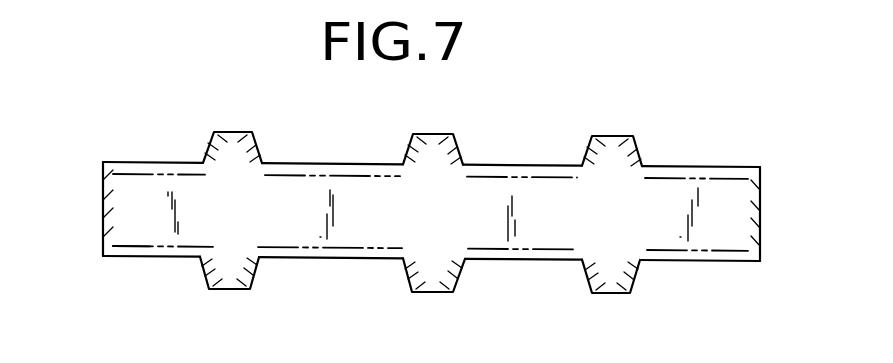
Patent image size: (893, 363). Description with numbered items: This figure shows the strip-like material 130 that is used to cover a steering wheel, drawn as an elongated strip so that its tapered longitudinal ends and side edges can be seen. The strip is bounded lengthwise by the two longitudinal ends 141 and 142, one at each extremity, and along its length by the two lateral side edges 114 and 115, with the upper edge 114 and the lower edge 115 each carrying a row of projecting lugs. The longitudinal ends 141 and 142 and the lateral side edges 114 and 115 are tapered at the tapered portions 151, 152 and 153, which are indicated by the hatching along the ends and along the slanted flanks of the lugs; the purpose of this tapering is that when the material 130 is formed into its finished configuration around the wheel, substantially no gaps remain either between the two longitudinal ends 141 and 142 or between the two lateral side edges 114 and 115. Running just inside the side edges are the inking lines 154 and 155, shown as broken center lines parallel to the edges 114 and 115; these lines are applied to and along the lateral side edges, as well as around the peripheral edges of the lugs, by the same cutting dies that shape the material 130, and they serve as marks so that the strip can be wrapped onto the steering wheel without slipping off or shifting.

The lateral side edge 114 is at (312, 162).
The lateral side edge 115 is at (343, 260).
The strip-like material 130 is at (190, 260).
The longitudinal end 141 is at (103, 195).
The longitudinal end 142 is at (763, 207).
The tapered portion 151 is at (113, 235).
The tapered portion 152 is at (242, 132).
The tapered portion 153 is at (233, 293).
The inking line 154 is at (141, 172).
The inking line 155 is at (135, 248).